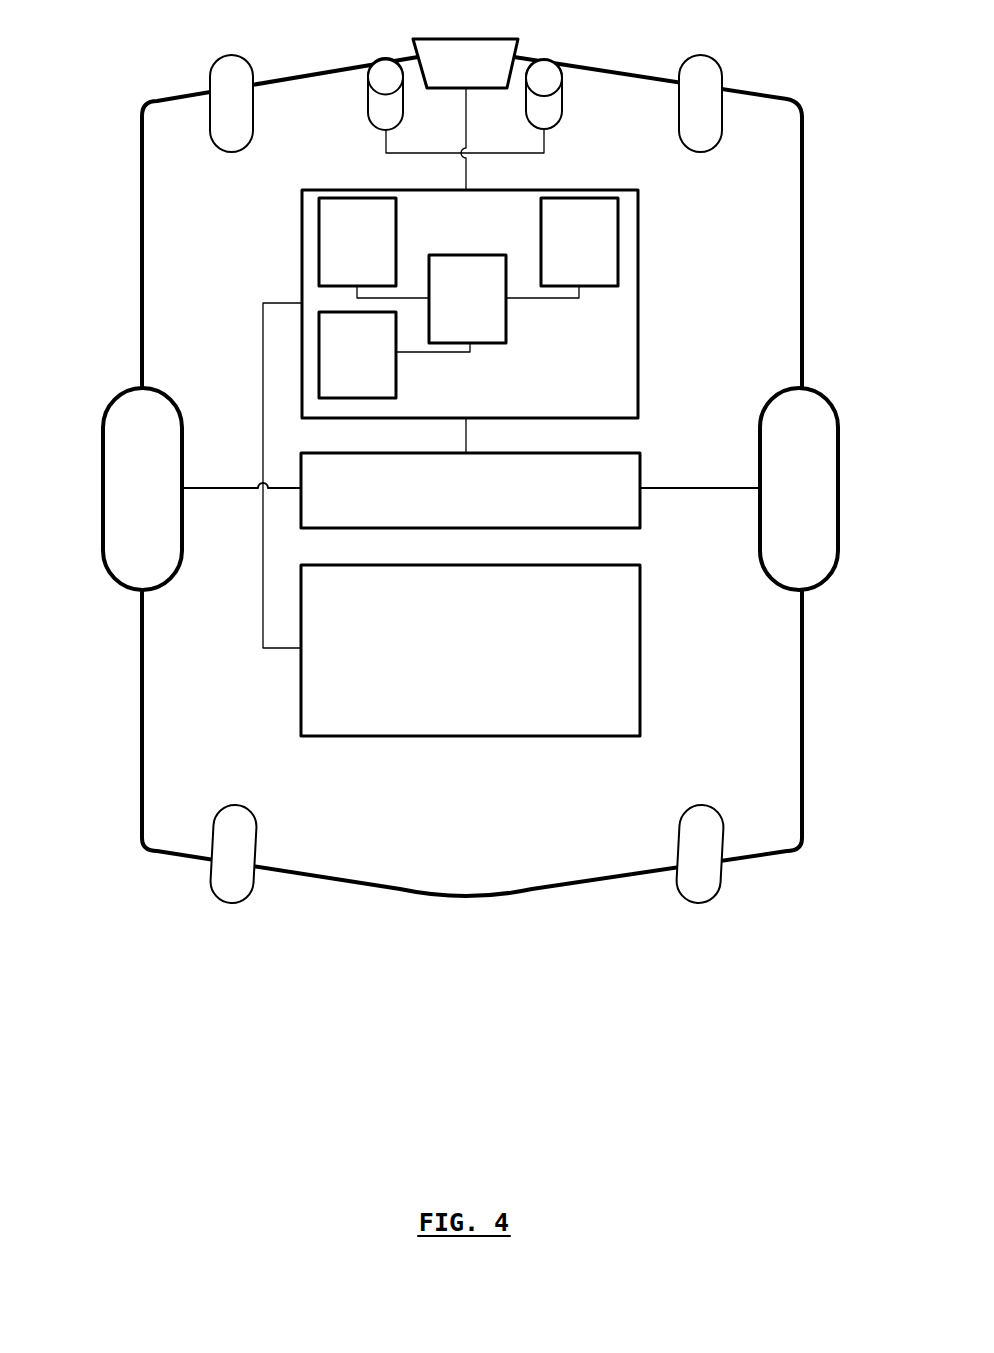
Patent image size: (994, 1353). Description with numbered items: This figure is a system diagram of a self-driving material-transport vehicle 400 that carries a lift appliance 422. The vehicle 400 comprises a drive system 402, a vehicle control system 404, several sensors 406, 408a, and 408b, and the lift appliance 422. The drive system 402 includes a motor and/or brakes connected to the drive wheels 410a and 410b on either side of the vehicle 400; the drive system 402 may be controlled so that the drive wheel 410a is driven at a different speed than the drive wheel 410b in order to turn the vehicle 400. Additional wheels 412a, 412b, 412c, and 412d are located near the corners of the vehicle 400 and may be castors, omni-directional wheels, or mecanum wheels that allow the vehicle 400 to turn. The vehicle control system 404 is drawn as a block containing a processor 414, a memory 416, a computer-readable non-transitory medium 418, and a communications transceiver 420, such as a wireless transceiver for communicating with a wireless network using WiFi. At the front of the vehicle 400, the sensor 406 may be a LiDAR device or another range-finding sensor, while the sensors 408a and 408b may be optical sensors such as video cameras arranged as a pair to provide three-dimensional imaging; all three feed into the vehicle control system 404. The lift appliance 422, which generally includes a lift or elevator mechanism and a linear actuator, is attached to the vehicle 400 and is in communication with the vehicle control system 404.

The self-driving material-transport vehicle 400 is at (453, 792).
The drive system 402 is at (448, 502).
The vehicle control system 404 is at (488, 238).
The sensor 406 is at (490, 73).
The sensor 408a is at (368, 92).
The sensor 408b is at (562, 90).
The drive wheel 410a is at (103, 488).
The drive wheel 410b is at (838, 488).
The additional wheel 412a is at (210, 80).
The additional wheel 412b is at (722, 75).
The additional wheel 412c is at (210, 873).
The additional wheel 412d is at (717, 877).
The processor 414 is at (448, 304).
The memory 416 is at (335, 248).
The computer-readable non-transitory medium 418 is at (558, 248).
The communications transceiver 420 is at (335, 361).
The lift appliance 422 is at (448, 664).